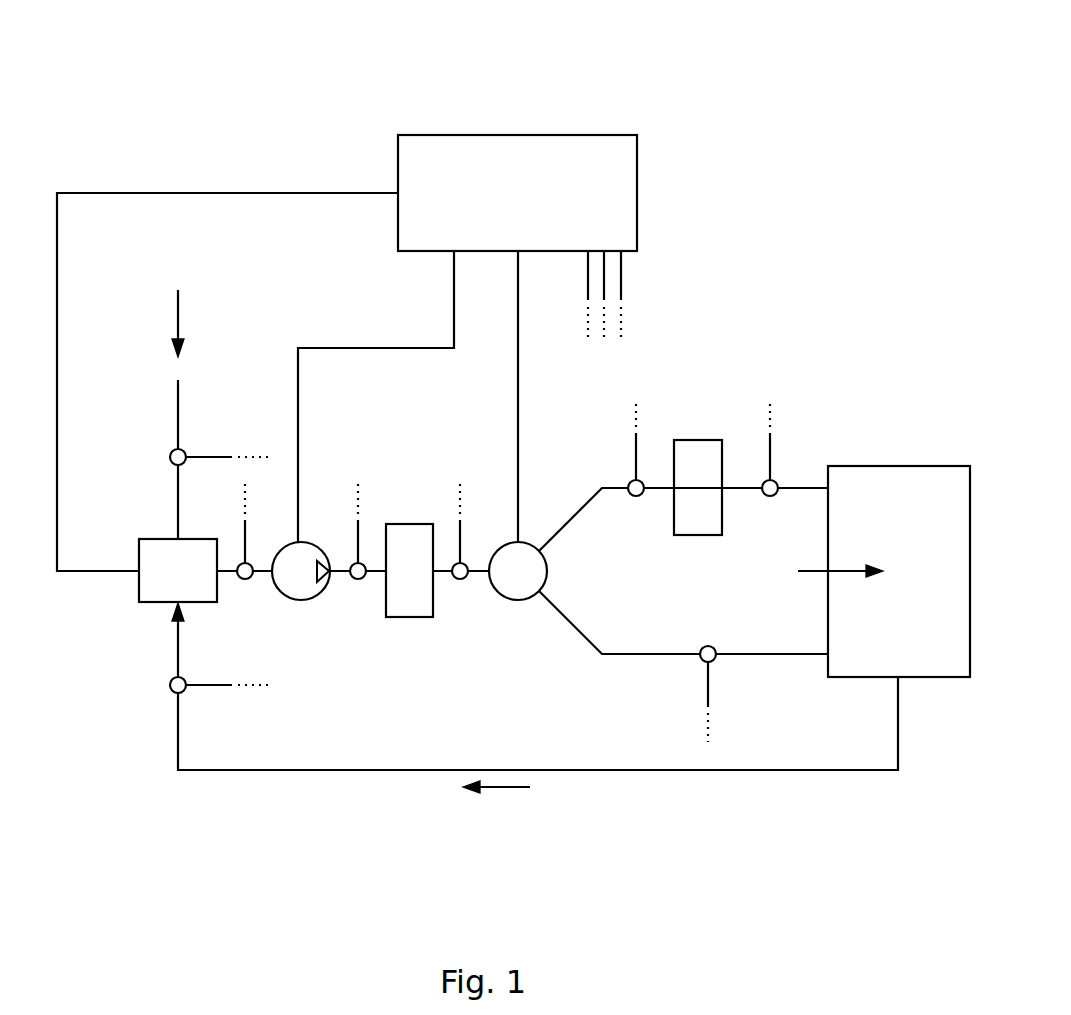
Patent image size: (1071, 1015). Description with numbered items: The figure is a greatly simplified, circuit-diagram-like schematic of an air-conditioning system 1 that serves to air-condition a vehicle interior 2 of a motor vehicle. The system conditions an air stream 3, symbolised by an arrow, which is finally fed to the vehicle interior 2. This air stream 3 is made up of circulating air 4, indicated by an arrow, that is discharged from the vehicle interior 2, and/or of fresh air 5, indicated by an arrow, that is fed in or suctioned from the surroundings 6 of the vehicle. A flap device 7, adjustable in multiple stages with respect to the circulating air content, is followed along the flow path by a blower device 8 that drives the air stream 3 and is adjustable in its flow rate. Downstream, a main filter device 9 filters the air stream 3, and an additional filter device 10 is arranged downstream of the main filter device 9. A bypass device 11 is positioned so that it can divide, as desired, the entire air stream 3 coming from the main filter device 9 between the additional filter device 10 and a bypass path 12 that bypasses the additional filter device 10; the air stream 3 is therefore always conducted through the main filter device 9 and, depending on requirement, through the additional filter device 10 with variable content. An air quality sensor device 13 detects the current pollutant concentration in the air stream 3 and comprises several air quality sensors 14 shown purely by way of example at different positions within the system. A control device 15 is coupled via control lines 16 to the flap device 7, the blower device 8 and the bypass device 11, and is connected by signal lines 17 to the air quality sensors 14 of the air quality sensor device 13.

The air-conditioning system 1 is at (871, 162).
The vehicle interior 2 is at (898, 585).
The air stream 3 is at (846, 569).
The circulating air 4 is at (505, 790).
The fresh air 5 is at (180, 313).
The surroundings 6 is at (171, 256).
The flap device 7 is at (171, 584).
The blower device 8 is at (301, 600).
The main filter device 9 is at (402, 584).
The additional filter device 10 is at (685, 500).
The bypass device 11 is at (505, 584).
The bypass path 12 is at (648, 657).
The air quality sensor device 13 is at (170, 457).
The air quality sensor 14 is at (443, 569).
The control device 15 is at (500, 201).
The control lines 16 is at (245, 193).
The signal lines 17 is at (588, 268).